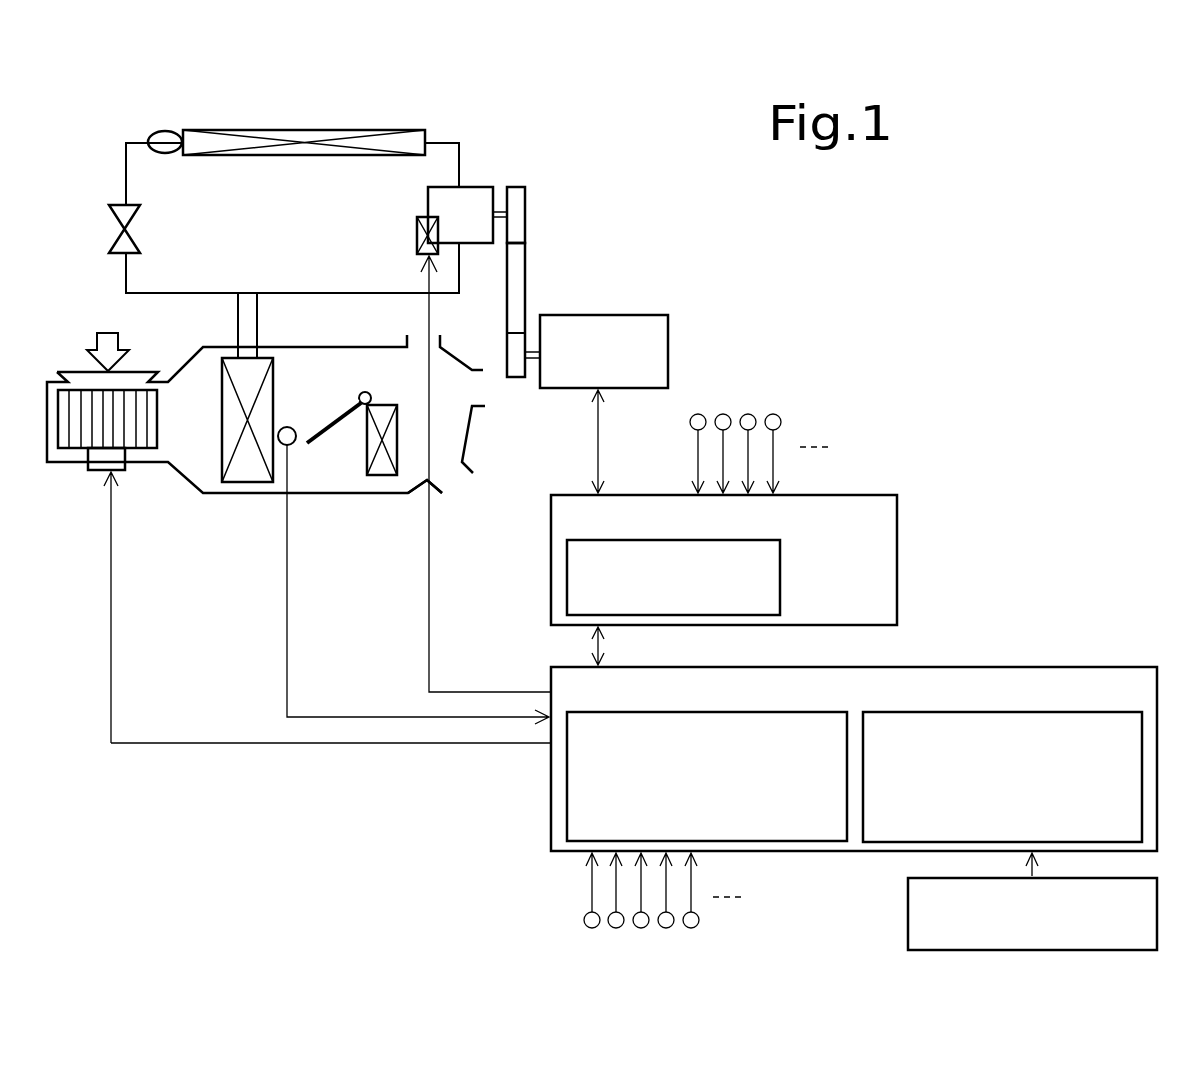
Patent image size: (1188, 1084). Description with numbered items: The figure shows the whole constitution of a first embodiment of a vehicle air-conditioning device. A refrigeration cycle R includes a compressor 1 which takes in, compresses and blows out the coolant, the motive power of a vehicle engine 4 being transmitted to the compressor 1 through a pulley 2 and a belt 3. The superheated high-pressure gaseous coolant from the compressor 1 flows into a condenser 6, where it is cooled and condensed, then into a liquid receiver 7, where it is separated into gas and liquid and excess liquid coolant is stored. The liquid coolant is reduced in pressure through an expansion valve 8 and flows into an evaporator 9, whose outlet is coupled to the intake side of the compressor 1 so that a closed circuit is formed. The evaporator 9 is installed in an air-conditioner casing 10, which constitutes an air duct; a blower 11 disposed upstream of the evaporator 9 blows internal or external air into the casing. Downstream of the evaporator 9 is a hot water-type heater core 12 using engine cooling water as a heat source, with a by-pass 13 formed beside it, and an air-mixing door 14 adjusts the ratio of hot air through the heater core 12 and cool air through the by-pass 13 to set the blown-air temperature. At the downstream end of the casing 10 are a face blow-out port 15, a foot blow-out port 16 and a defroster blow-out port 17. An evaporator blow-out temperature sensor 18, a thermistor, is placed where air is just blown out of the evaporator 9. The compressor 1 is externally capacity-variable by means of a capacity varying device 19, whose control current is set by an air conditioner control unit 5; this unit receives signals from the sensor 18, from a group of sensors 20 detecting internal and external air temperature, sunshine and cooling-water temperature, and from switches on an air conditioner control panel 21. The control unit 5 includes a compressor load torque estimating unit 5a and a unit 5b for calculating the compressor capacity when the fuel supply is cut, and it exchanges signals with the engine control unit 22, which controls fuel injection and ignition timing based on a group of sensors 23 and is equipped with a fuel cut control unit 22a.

The compressor 1 is at (475, 194).
The pulley 2 is at (516, 192).
The belt 3 is at (517, 262).
The vehicle engine 4 is at (626, 315).
The air conditioner control unit 5 is at (1035, 660).
The compressor load torque estimating unit 5a is at (797, 842).
The unit for calculating the compressor capacity when the fuel is cut 5b is at (903, 842).
The condenser 6 is at (325, 130).
The liquid receiver 7 is at (165, 131).
The expansion valve 8 is at (112, 232).
The evaporator 9 is at (273, 368).
The air-conditioner casing 10 is at (218, 345).
The blower 11 is at (77, 452).
The hot water-type heater core 12 is at (380, 475).
The by-pass 13 is at (369, 367).
The air-mixing door 14 is at (332, 428).
The face blow-out port 15 is at (477, 388).
The foot blow-out port 16 is at (455, 480).
The defroster blow-out port 17 is at (440, 335).
The evaporator blow-out temperature sensor 18 is at (290, 447).
The capacity varying device 19 is at (417, 240).
The group of sensors 20 is at (650, 933).
The air conditioner control panel 21 is at (908, 930).
The engine control unit 22 is at (898, 512).
The fuel cut control unit 22a is at (567, 578).
The group of sensors 23 is at (732, 402).
The refrigeration cycle R is at (120, 168).